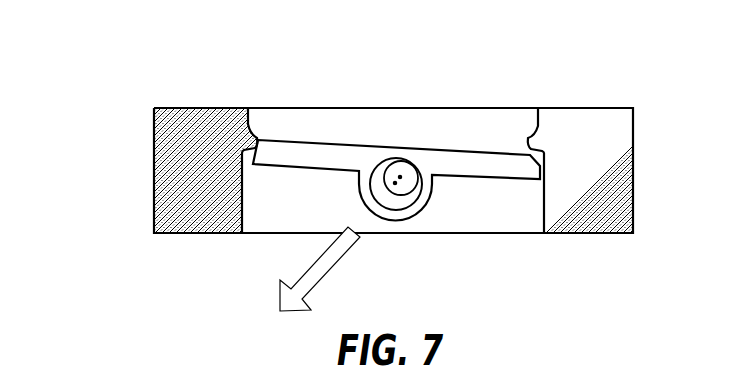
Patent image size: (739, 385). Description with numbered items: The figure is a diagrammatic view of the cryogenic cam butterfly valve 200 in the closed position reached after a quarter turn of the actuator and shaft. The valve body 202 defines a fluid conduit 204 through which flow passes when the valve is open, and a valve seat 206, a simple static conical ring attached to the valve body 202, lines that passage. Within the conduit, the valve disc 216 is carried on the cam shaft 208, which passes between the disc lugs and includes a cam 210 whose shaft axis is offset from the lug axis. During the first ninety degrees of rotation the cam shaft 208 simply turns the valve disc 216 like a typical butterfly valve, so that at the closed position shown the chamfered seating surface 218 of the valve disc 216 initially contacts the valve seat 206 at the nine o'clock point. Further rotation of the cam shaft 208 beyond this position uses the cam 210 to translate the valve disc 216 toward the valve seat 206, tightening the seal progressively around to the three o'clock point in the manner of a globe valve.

The cryogenic cam butterfly valve 200 is at (384, 180).
The valve body 202 is at (384, 182).
The fluid conduit 204 is at (545, 208).
The valve seat 206 is at (258, 140).
The cam shaft 208 is at (387, 112).
The cam 210 is at (385, 172).
The valve disc 216 is at (462, 152).
The seating surface 218 is at (582, 108).